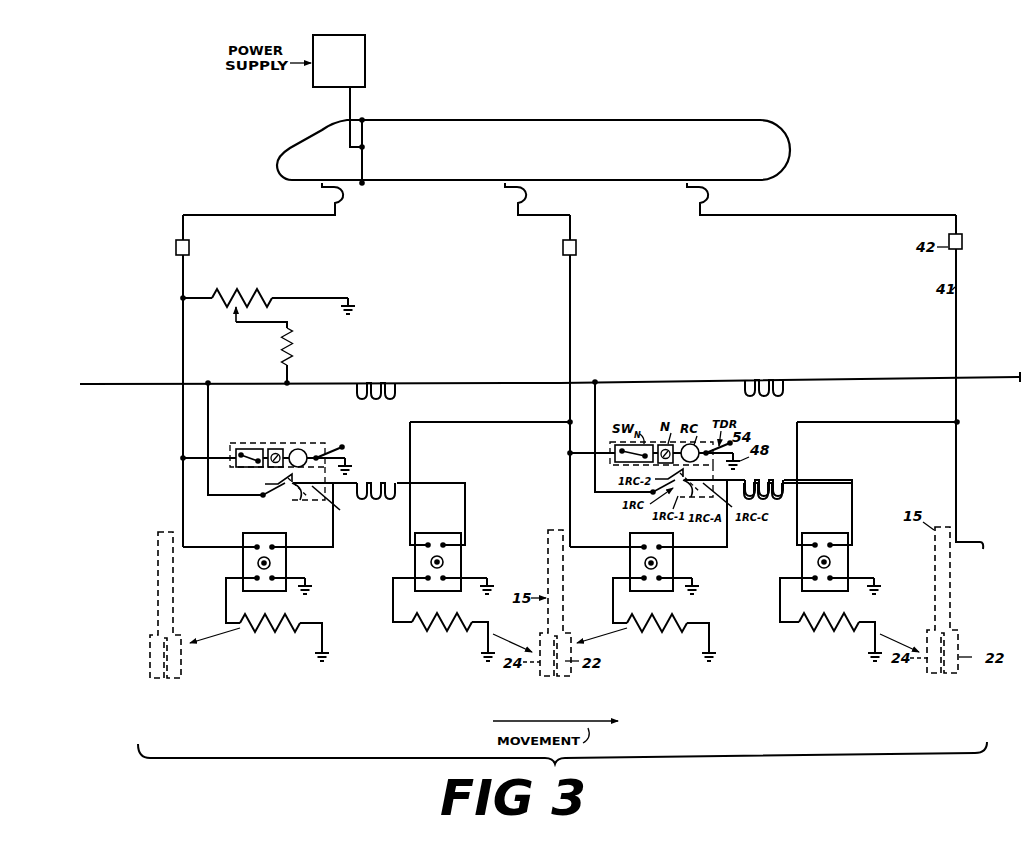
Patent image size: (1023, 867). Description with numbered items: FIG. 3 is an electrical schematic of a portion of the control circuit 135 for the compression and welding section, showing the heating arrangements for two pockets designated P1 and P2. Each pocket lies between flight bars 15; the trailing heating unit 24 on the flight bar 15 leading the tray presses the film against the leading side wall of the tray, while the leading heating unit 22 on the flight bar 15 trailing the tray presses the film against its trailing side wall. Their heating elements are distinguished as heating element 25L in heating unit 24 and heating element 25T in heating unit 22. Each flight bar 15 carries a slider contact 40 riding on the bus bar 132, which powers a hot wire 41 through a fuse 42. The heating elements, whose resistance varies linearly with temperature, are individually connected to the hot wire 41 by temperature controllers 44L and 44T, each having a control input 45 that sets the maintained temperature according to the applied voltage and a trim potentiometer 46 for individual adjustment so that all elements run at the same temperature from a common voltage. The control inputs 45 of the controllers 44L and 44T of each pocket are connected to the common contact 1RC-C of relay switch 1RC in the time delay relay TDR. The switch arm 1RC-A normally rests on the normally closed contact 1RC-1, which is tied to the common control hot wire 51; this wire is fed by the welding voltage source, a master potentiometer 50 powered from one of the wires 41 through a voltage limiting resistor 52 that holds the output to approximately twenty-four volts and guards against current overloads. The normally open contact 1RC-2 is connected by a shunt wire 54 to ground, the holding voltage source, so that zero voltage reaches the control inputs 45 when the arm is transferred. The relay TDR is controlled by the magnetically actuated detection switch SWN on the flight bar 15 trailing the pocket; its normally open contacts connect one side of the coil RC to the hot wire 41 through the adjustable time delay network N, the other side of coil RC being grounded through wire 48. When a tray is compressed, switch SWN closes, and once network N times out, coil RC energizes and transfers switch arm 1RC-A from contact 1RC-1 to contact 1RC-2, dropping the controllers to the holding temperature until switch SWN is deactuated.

The bus bar 132 is at (489, 119).
The control circuit 135 is at (941, 199).
The slider contact 40 is at (322, 194).
The fuse 42 is at (190, 246).
The hot wire 41 is at (181, 282).
The master potentiometer 50 is at (258, 292).
The voltage limiting resistor 52 is at (295, 349).
The common control hot wire 51 is at (312, 381).
The shunt wire 54 is at (337, 445).
The wire 48 is at (350, 462).
The control input 45 is at (274, 547).
The trim potentiometer 46 is at (258, 564).
The trailing temperature controller 44T is at (289, 564).
The leading temperature controller 44L is at (463, 562).
The trailing heating element 25T is at (253, 632).
The leading heating element 25L is at (448, 632).
The flight bar 15 is at (157, 566).
The trailing heating unit 24 is at (152, 646).
The leading heating unit 22 is at (182, 672).
The relay switch 1RC is at (283, 491).
The normally closed contact 1RC-1 is at (288, 499).
The normally open contact 1RC-2 is at (267, 485).
The switch arm 1RC-A is at (311, 504).
The common contact 1RC-C is at (344, 505).
The detection switch SWN is at (262, 449).
The time delay network N is at (279, 448).
The coil RC is at (309, 444).
The time delay relay TDR is at (329, 451).
The pocket P1 is at (352, 678).
The pocket P2 is at (768, 676).